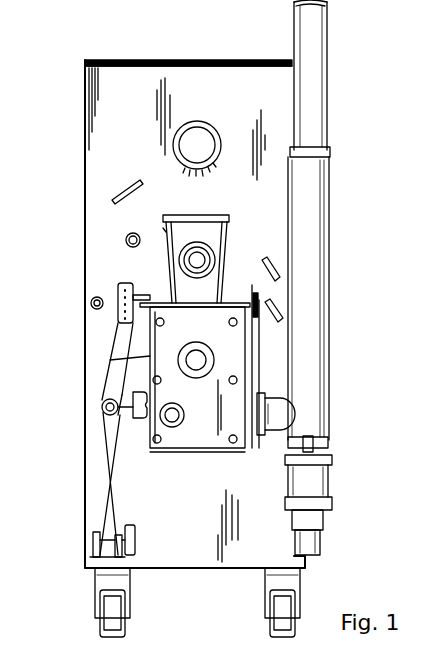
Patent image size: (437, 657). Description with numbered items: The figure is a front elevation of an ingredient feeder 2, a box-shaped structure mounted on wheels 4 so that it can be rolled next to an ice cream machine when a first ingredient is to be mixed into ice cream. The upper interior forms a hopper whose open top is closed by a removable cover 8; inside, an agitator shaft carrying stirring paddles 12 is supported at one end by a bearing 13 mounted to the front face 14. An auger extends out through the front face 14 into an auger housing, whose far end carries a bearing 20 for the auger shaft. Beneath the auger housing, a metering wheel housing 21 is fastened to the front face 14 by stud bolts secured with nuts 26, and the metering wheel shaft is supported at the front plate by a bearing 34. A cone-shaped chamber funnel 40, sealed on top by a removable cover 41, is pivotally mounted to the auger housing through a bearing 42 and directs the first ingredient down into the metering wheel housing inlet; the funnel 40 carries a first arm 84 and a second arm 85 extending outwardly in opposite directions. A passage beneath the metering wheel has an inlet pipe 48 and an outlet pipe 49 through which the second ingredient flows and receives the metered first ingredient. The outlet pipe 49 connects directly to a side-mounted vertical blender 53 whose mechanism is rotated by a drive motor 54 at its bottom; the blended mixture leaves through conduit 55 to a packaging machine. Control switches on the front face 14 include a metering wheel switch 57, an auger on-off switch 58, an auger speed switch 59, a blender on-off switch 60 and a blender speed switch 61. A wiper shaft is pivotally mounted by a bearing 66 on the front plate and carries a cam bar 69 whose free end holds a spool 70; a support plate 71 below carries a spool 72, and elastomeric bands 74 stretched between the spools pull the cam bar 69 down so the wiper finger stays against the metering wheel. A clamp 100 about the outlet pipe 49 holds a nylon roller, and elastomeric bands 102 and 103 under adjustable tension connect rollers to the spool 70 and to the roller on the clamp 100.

The ingredient feeder 2 is at (76, 97).
The wheels 4 is at (128, 604).
The removable cover 8 is at (120, 60).
The stirring paddles 12 is at (195, 612).
The bearing 13 is at (218, 128).
The front face 14 is at (127, 142).
The bearing 20 is at (185, 262).
The metering wheel housing 21 is at (112, 356).
The nut 26 is at (240, 384).
The bearing 34 is at (215, 360).
The chamber funnel 40 is at (163, 230).
The removable cover 41 is at (200, 213).
The bearing 42 is at (214, 246).
The inlet pipe 48 is at (118, 460).
The outlet pipe 49 is at (250, 446).
The vertical blender 53 is at (330, 300).
The drive motor 54 is at (332, 510).
The conduit 55 is at (328, 28).
The metering wheel switch 57 is at (92, 308).
The auger on-off switch 58 is at (118, 192).
The auger speed switch 59 is at (125, 240).
The blender on-off switch 60 is at (272, 266).
The blender speed switch 61 is at (278, 316).
The bearing 66 is at (190, 445).
The cam bar 69 is at (135, 420).
The spool 70 is at (100, 410).
The support plate 71 is at (135, 540).
The spool 72 is at (93, 545).
The elastomeric bands 74 is at (105, 505).
The first arm 84 is at (238, 290).
The second arm 85 is at (118, 288).
The clamp 100 is at (330, 457).
The elastomeric band 102 is at (105, 380).
The elastomeric band 103 is at (312, 440).